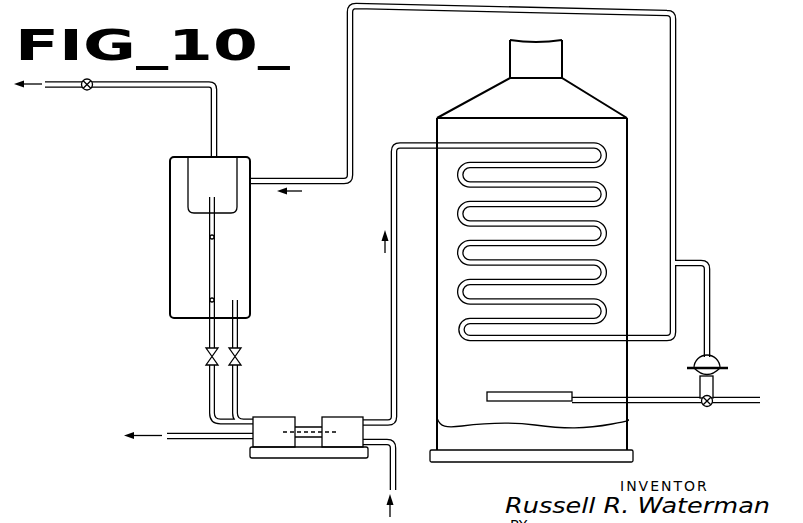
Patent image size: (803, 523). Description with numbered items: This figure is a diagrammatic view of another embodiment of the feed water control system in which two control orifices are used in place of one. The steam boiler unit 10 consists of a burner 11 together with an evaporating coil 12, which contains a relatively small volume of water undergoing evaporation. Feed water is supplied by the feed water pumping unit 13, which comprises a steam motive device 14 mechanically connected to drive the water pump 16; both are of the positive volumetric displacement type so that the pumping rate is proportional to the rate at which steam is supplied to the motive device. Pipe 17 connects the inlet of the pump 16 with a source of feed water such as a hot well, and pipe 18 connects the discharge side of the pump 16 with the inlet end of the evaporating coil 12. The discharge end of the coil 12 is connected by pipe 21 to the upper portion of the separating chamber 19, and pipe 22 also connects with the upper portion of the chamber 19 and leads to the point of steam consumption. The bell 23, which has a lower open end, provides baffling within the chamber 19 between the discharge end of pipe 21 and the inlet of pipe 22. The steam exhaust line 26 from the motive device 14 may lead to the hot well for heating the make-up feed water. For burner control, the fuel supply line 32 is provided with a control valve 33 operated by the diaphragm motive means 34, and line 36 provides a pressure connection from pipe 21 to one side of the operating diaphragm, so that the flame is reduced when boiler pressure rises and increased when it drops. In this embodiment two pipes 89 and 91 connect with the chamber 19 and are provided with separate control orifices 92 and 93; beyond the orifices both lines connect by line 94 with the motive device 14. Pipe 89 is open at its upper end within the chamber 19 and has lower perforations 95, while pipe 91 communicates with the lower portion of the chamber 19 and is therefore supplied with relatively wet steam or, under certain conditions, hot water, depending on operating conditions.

The steam boiler unit 10 is at (488, 92).
The burner 11 is at (561, 392).
The evaporating coil 12 is at (488, 343).
The feed water pumping unit 13 is at (299, 482).
The steam motive device 14 is at (288, 416).
The water pump 16 is at (341, 416).
The pipe 17 is at (387, 477).
The pipe 18 is at (391, 288).
The separating chamber 19 is at (170, 282).
The pipe 21 is at (347, 118).
The pipe 22 is at (142, 90).
The bell 23 is at (188, 182).
The steam exhaust line 26 is at (202, 443).
The fuel supply line 32 is at (650, 403).
The control valve 33 is at (708, 407).
The diaphragm motive means 34 is at (721, 363).
The line 36 is at (711, 315).
The pipe 89 is at (207, 333).
The pipe 91 is at (245, 333).
The control orifice 92 is at (205, 357).
The control orifice 93 is at (243, 357).
The line 94 is at (242, 417).
The lower perforations 95 is at (209, 237).